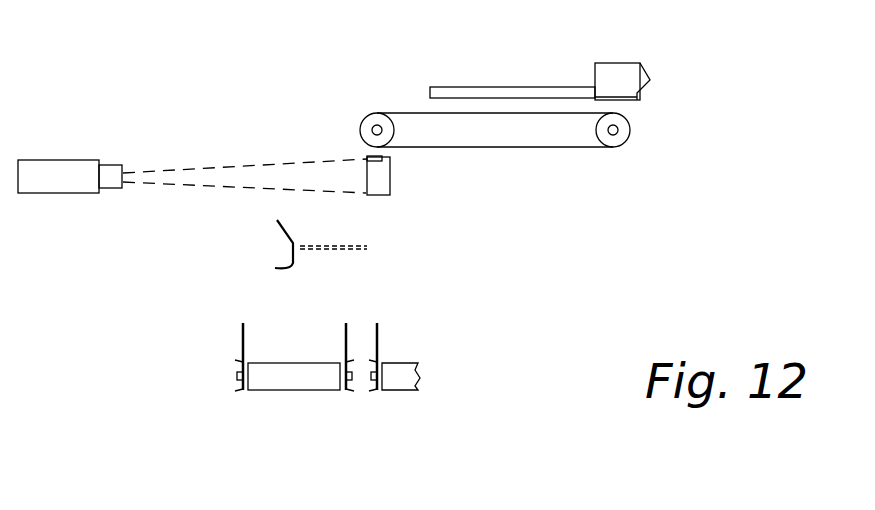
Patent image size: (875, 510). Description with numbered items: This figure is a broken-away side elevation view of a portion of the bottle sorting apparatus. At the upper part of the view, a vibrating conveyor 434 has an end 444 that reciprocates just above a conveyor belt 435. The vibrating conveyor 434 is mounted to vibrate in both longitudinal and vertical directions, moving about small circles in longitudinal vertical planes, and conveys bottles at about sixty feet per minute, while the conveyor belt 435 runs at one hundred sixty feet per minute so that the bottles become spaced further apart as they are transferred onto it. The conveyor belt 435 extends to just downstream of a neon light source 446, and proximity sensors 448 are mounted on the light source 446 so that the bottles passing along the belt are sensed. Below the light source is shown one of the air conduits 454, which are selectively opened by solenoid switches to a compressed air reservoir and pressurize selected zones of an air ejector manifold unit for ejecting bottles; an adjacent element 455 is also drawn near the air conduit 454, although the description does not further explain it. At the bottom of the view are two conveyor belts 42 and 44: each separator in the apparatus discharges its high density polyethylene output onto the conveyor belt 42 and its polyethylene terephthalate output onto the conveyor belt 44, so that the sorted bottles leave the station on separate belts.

The conveyor belt 42 is at (275, 390).
The conveyor belt 44 is at (400, 390).
The vibrating conveyor 434 is at (652, 72).
The conveyor belt 435 is at (583, 147).
The end 444 is at (596, 72).
The neon light source 446 is at (382, 195).
The proximity sensors 448 is at (382, 158).
The air conduits 454 is at (297, 268).
The reflected beam 455 is at (287, 228).